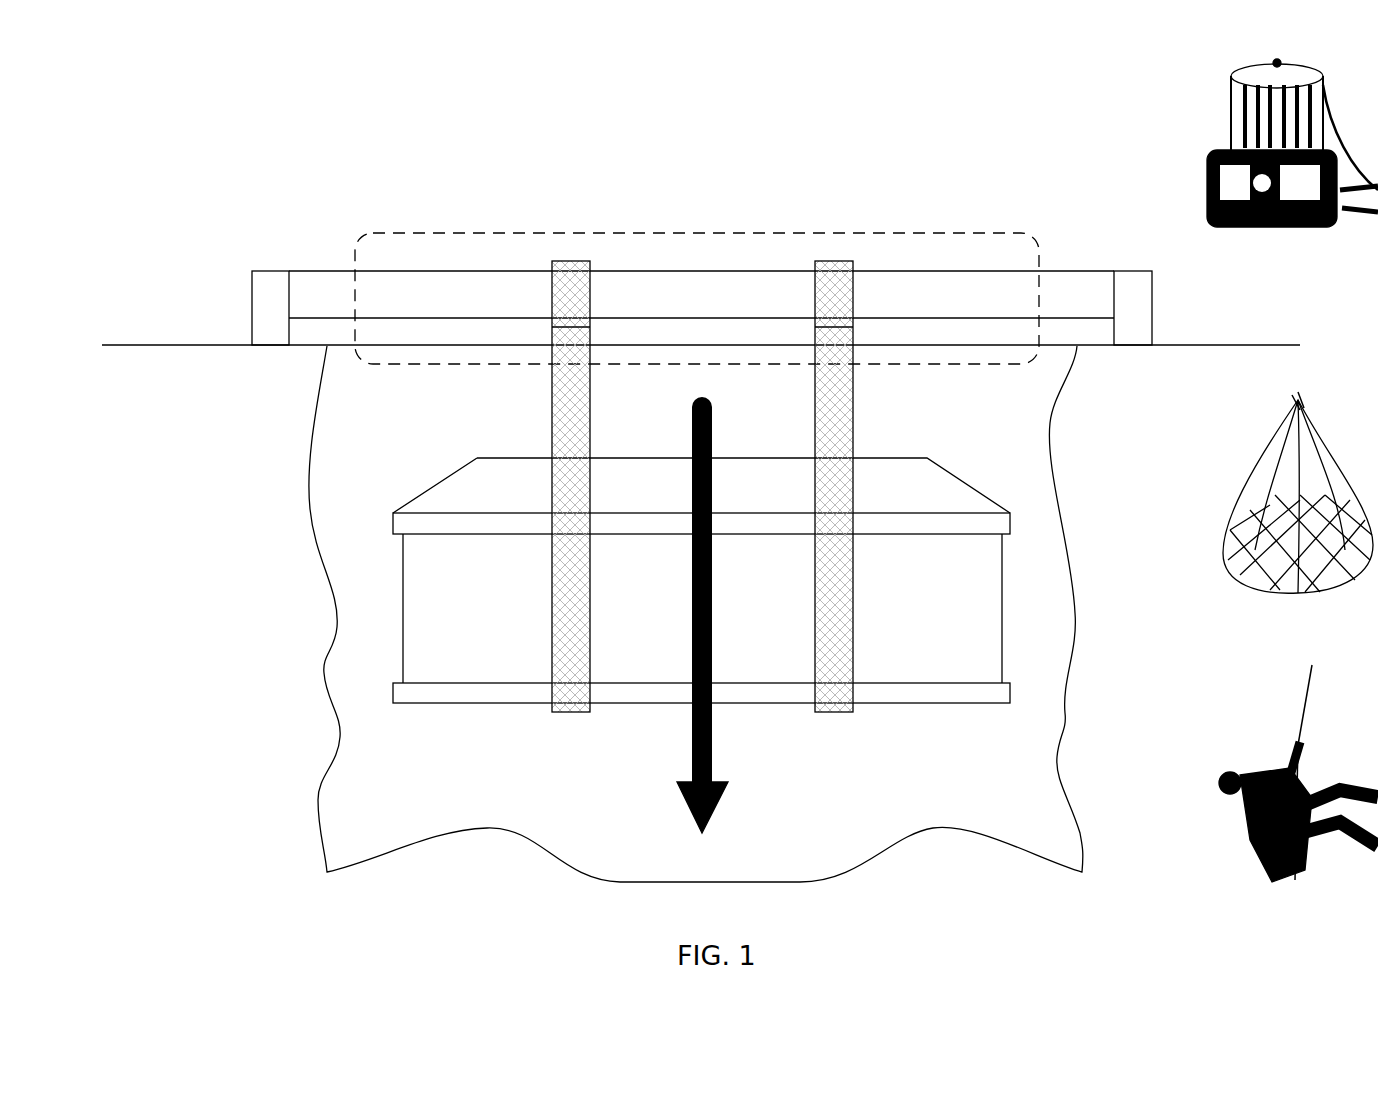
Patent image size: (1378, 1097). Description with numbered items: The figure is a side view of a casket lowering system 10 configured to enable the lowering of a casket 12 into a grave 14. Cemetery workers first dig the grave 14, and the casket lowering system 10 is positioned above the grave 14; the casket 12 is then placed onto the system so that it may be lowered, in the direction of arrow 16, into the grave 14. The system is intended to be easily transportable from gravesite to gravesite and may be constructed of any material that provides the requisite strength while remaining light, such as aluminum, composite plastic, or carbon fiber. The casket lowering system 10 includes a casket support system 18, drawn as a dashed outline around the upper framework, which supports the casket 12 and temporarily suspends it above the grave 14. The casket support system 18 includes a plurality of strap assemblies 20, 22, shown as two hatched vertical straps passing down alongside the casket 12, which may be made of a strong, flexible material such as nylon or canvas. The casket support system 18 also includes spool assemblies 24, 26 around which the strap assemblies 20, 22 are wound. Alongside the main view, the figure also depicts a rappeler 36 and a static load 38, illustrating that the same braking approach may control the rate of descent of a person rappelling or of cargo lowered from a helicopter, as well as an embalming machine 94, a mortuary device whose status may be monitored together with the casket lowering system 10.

The casket lowering system 10 is at (156, 103).
The casket 12 is at (701, 580).
The grave 14 is at (337, 623).
The arrow 16 is at (690, 743).
The casket support system 18 is at (693, 232).
The strap assembly 20 is at (573, 260).
The strap assembly 22 is at (838, 260).
The spool assembly 24 is at (702, 308).
The spool assembly 26 is at (702, 308).
The rappeler 36 is at (1225, 778).
The static load 38 is at (1237, 510).
The embalming machine 94 is at (1230, 105).